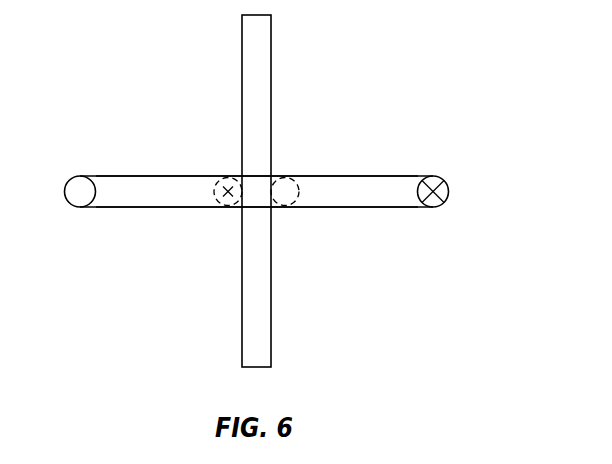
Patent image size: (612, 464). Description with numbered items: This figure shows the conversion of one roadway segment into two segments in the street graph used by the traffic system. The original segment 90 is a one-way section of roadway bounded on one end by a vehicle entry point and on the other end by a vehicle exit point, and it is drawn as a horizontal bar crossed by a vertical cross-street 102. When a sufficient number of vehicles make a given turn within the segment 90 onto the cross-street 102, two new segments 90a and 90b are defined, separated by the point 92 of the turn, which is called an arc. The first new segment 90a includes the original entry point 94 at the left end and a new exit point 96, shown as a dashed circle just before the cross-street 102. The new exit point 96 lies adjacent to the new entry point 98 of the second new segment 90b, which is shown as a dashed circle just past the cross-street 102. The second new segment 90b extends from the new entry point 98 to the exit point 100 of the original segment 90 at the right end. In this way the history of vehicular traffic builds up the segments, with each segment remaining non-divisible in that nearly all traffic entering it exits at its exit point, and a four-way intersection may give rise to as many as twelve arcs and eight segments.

The segment 90 is at (157, 260).
The first new segment 90a is at (143, 187).
The second new segment 90b is at (382, 186).
The point of the turn 92 is at (259, 190).
The original entry point 94 is at (64, 192).
The new exit point 96 is at (213, 190).
The new entry point 98 is at (301, 190).
The exit point 100 is at (449, 192).
The cross-street 102 is at (266, 55).